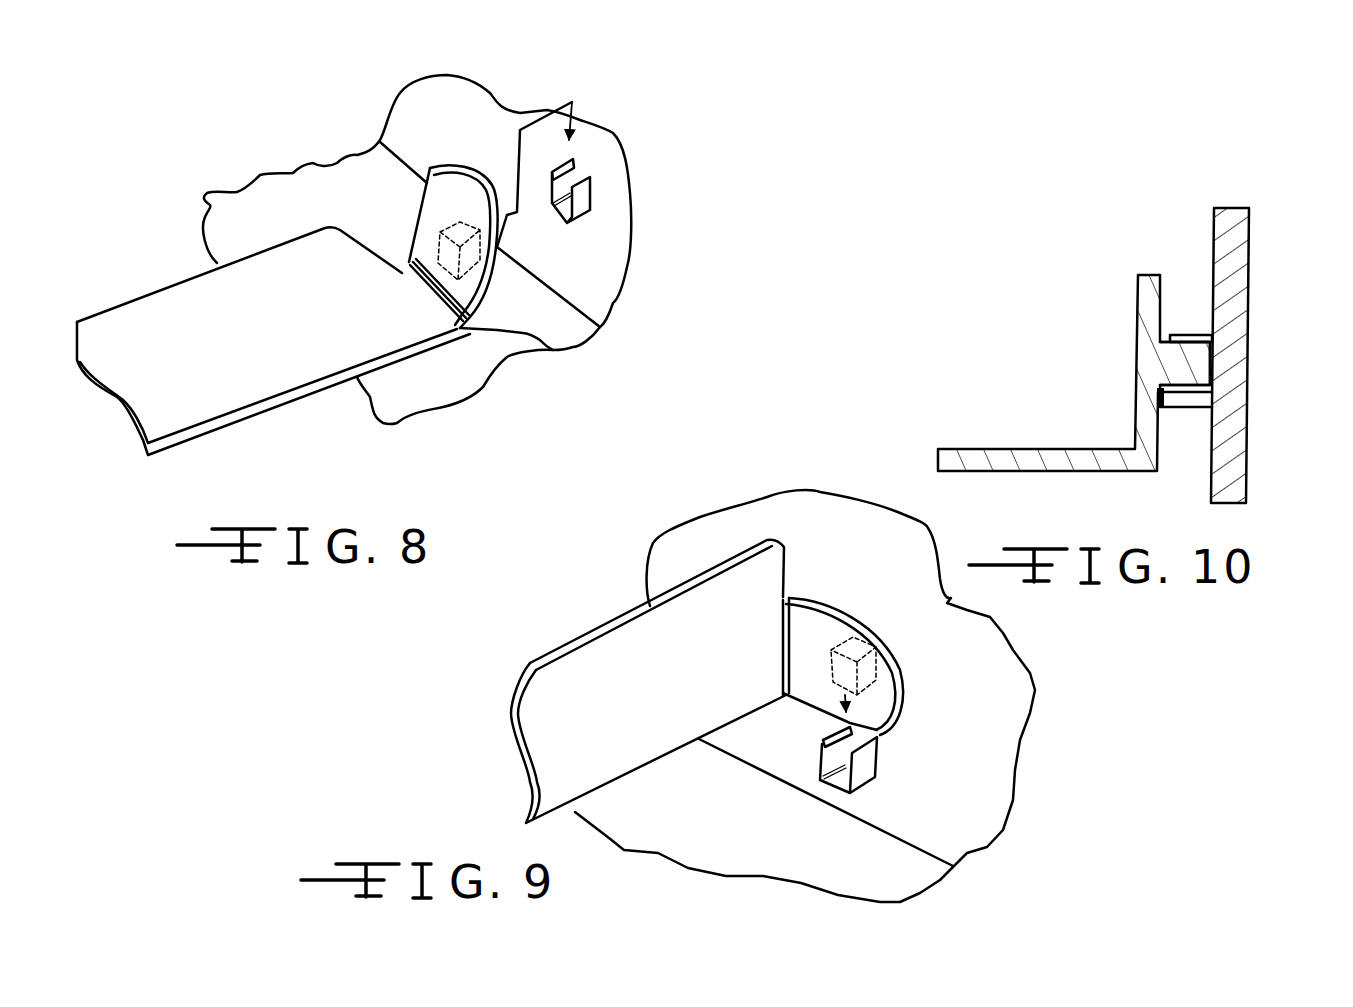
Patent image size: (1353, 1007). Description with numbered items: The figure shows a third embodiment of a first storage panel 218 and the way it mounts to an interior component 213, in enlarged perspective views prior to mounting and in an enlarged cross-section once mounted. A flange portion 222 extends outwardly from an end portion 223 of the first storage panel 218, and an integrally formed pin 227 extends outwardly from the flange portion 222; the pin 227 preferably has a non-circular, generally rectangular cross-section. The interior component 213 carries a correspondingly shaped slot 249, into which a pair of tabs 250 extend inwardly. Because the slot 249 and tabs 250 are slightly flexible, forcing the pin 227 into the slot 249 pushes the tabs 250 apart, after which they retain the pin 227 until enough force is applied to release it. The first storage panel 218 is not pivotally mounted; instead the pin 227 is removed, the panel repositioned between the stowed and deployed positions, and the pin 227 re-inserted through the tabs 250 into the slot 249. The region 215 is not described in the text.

In FIG. 8, the interior component 213 is at (617, 180).
In FIG. 10, the interior component 213 is at (1243, 250).
In FIG. 8, the lower base portion 215 is at (490, 383).
In FIG. 8, the first storage panel 218 is at (393, 272).
In FIG. 9, the first storage panel 218 is at (773, 689).
In FIG. 10, the first storage panel 218 is at (1133, 339).
In FIG. 8, the flange portion 222 is at (437, 162).
In FIG. 9, the flange portion 222 is at (827, 605).
In FIG. 10, the flange portion 222 is at (1136, 339).
In FIG. 8, the end portion 223 is at (567, 353).
In FIG. 8, the pin 227 is at (490, 257).
In FIG. 9, the pin 227 is at (880, 665).
In FIG. 10, the pin 227 is at (1182, 356).
In FIG. 8, the slot 249 is at (580, 203).
In FIG. 9, the slot 249 is at (878, 762).
In FIG. 10, the slot 249 is at (1192, 410).
In FIG. 8, the tabs 250 is at (575, 164).
In FIG. 9, the tabs 250 is at (823, 750).
In FIG. 10, the tabs 250 is at (1197, 339).